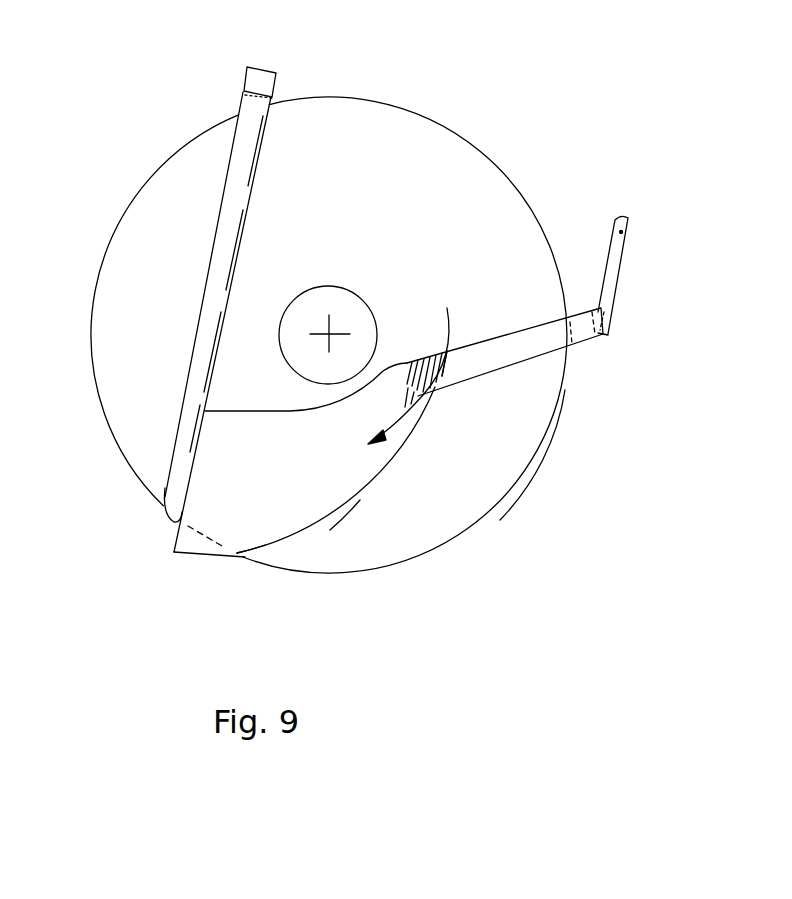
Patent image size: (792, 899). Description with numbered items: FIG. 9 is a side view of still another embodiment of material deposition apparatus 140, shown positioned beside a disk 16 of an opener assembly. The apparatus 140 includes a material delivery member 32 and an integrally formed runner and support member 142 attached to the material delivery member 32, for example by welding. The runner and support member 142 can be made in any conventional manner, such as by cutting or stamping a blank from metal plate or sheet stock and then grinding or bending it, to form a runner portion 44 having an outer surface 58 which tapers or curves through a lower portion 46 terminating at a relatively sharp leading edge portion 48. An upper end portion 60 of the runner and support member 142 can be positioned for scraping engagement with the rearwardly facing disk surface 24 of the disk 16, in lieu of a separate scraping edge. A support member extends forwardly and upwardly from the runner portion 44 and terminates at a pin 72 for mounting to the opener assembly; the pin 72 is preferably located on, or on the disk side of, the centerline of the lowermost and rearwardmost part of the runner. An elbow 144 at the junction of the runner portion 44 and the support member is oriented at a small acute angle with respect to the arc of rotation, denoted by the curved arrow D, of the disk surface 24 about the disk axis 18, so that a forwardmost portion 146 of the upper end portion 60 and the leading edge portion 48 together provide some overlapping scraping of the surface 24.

The disk 16 is at (568, 400).
The disk axis 18 is at (327, 331).
The rearwardly facing disk surface 24 is at (533, 435).
The material delivery member 32 is at (242, 83).
The runner portion 44 is at (187, 555).
The lower portion 46 is at (247, 530).
The leading edge portion 48 is at (297, 535).
The outer surface 58 is at (340, 477).
The upper end portion 60 is at (265, 412).
The pin 72 is at (627, 243).
The material deposition apparatus 140 is at (578, 542).
The runner and support member 142 is at (392, 459).
The elbow 144 is at (420, 393).
The forwardmost portion 146 is at (403, 362).
The curved arrow D is at (450, 327).